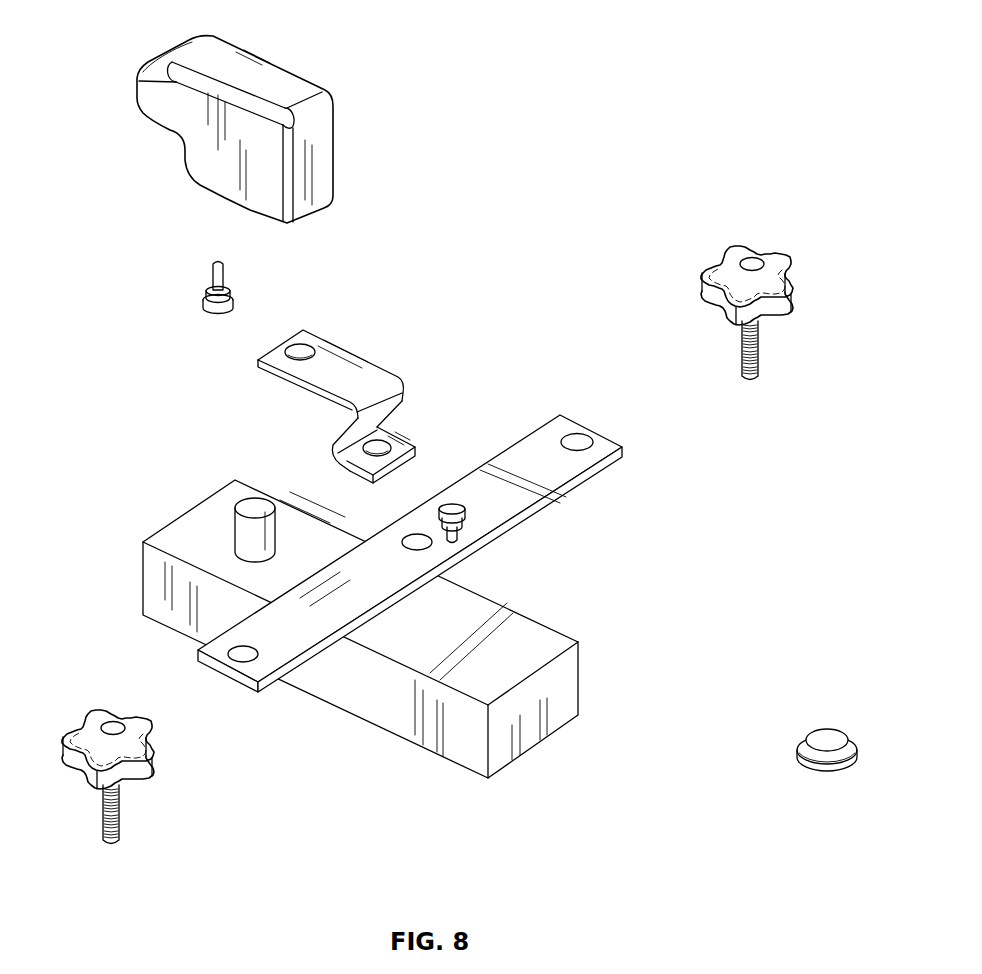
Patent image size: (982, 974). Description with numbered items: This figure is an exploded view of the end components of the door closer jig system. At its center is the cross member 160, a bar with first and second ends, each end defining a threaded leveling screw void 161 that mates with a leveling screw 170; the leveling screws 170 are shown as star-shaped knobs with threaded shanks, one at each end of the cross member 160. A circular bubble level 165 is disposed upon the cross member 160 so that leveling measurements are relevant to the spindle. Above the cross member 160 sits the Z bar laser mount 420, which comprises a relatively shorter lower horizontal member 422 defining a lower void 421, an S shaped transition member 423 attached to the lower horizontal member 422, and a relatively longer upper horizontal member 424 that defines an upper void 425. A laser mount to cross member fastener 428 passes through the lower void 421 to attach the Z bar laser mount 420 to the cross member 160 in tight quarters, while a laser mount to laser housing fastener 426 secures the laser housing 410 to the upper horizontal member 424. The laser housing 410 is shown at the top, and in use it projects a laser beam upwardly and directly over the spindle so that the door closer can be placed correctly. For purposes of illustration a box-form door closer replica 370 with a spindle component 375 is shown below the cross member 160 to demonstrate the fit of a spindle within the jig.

The laser housing 410 is at (288, 82).
The Z bar laser mount 420 is at (365, 402).
The lower void 421 is at (372, 458).
The lower horizontal member 422 is at (405, 437).
The S shaped transition member 423 is at (328, 448).
The upper horizontal member 424 is at (360, 365).
The upper void 425 is at (300, 348).
The laser mount to laser housing fastener 426 is at (207, 293).
The laser mount to cross member fastener 428 is at (453, 507).
The cross member 160 is at (332, 595).
The threaded leveling screw void 161 is at (577, 438).
The circular bubble level 165 is at (827, 740).
The leveling screw 170 is at (768, 258).
The door closer replica 370 is at (567, 684).
The spindle component 375 is at (243, 545).